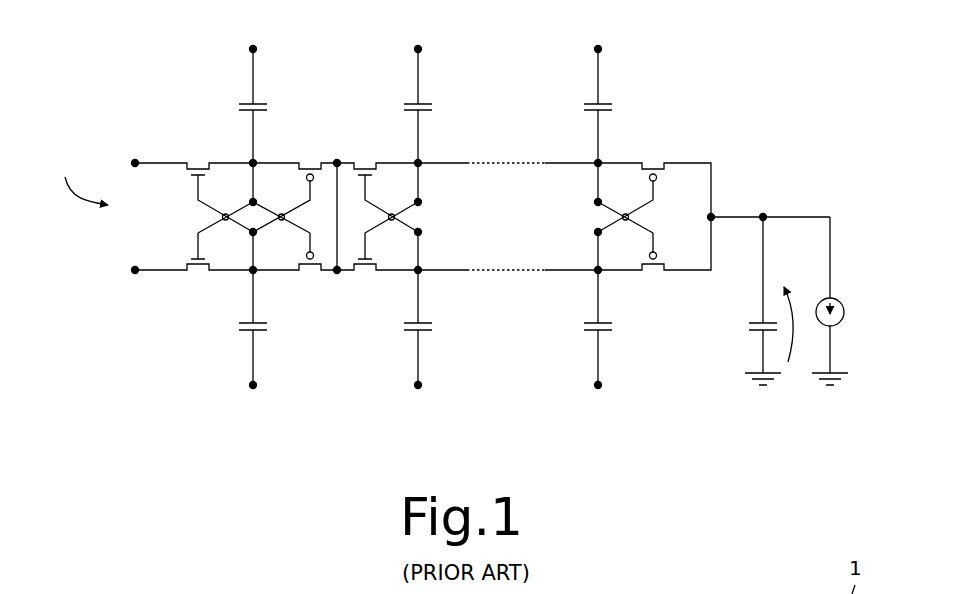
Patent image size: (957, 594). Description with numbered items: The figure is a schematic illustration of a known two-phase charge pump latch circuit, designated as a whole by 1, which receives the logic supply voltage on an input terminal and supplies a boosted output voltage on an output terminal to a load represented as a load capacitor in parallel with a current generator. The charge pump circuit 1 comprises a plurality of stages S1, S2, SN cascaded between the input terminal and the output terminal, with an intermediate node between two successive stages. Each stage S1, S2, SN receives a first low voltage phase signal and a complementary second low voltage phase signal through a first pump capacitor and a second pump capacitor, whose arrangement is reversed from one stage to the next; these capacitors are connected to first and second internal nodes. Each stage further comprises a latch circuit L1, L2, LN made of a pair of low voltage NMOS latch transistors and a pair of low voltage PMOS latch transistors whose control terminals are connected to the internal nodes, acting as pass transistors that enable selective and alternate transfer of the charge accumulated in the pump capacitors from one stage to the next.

The two-phase charge pump latch circuit 1 is at (769, 138).
The first stage S1 is at (297, 132).
The second stage S2 is at (470, 132).
The N-th stage SN is at (635, 132).
The first latch circuit L1 is at (215, 283).
The second latch circuit L2 is at (392, 290).
The N-th latch circuit LN is at (656, 281).